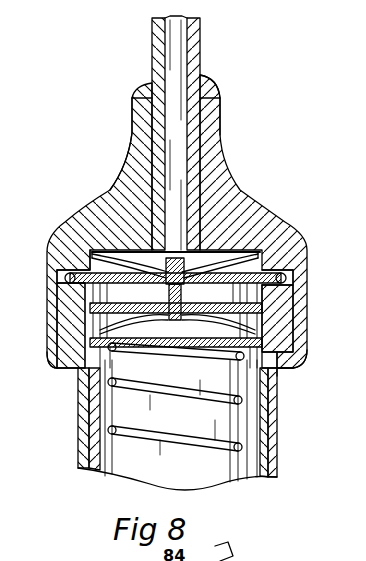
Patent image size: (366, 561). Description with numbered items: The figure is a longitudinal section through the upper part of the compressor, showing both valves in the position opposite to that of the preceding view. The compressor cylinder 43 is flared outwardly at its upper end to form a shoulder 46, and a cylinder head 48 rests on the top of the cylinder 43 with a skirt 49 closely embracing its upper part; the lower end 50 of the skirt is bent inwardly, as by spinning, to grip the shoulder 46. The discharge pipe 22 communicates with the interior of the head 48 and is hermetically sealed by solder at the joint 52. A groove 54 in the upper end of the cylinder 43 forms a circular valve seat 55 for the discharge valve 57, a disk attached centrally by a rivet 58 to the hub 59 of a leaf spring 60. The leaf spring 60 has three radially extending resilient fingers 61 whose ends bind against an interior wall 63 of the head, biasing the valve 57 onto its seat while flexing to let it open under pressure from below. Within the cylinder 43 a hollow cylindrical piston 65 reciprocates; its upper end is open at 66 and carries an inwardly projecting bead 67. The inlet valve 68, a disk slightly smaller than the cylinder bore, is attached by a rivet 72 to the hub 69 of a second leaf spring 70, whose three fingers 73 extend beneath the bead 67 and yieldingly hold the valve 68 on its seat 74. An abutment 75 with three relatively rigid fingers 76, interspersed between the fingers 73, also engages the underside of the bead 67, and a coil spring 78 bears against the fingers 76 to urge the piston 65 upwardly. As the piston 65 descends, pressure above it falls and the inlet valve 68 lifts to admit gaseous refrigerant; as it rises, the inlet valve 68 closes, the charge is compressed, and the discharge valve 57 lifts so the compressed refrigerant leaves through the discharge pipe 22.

The discharge pipe 22 is at (200, 33).
The joint 52 is at (211, 82).
The cylinder head 48 is at (132, 115).
The radially extending resilient fingers 61 is at (88, 226).
The leaf spring 60 is at (66, 228).
The interior wall 63 is at (56, 262).
The discharge valve 57 is at (63, 278).
The seat 74 is at (57, 312).
The fingers 73 is at (57, 336).
The relatively rigid fingers 76 is at (52, 346).
The leaf spring 70 is at (57, 369).
The groove 54 is at (292, 276).
The circular valve seat 55 is at (304, 296).
The inlet valve 68 is at (299, 303).
The bead 67 is at (265, 328).
The skirt 49 is at (308, 346).
The lower end of the skirt 50 is at (302, 368).
The shoulder 46 is at (295, 373).
The cylinder 43 is at (275, 438).
The hollow cylindrical piston 65 is at (265, 474).
The coil spring 78 is at (240, 456).
The abutment 75 is at (184, 350).
The open head of the piston 66 is at (248, 328).
The rivet 72 is at (148, 299).
The hub 59 is at (155, 289).
The rivet 58 is at (175, 293).
The hub 69 is at (169, 322).